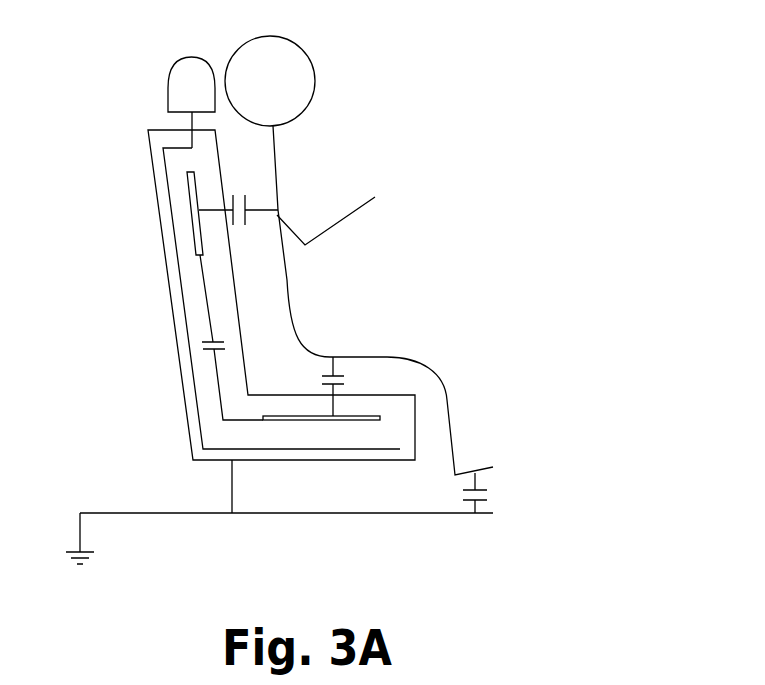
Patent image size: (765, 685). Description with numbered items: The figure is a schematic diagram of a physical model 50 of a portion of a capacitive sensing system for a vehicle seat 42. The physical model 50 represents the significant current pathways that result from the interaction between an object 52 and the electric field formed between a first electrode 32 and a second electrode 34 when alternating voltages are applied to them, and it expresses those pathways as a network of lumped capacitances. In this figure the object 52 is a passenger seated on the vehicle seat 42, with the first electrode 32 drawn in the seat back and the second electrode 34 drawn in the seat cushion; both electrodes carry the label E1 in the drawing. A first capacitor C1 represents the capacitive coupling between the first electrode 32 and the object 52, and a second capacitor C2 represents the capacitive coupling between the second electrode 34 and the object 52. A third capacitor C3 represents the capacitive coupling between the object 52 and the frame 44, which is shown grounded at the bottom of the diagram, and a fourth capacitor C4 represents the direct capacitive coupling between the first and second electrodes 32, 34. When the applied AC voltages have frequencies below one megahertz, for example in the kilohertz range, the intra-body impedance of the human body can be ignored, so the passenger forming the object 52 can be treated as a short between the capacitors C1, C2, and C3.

The physical model 50 is at (359, 245).
The object 52 is at (287, 287).
The vehicle seat 42 is at (175, 324).
The first electrode 32 is at (184, 176).
The second electrode 34 is at (352, 423).
The frame 44 is at (132, 512).
The electrode E1 is at (255, 359).
The first capacitor C1 is at (238, 189).
The second capacitor C2 is at (352, 386).
The third capacitor C3 is at (492, 493).
The fourth capacitor C4 is at (231, 337).